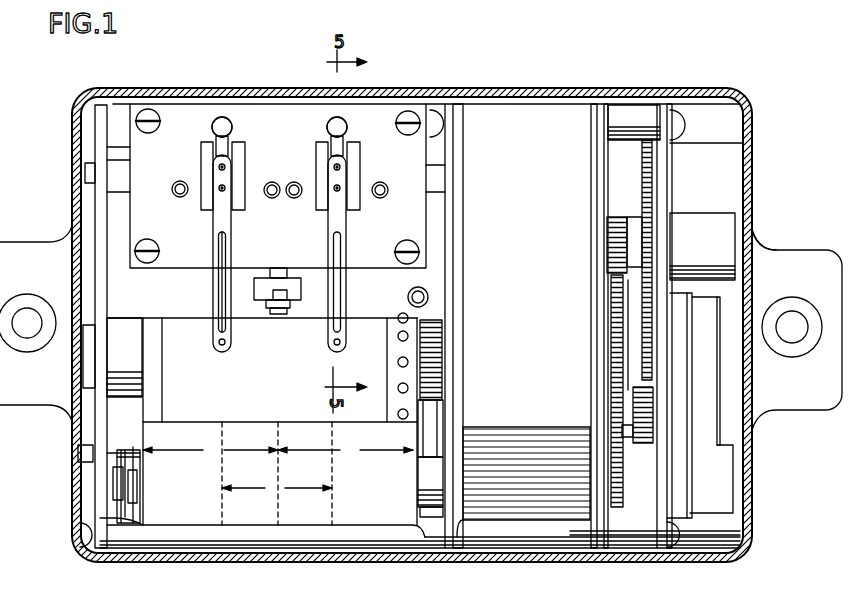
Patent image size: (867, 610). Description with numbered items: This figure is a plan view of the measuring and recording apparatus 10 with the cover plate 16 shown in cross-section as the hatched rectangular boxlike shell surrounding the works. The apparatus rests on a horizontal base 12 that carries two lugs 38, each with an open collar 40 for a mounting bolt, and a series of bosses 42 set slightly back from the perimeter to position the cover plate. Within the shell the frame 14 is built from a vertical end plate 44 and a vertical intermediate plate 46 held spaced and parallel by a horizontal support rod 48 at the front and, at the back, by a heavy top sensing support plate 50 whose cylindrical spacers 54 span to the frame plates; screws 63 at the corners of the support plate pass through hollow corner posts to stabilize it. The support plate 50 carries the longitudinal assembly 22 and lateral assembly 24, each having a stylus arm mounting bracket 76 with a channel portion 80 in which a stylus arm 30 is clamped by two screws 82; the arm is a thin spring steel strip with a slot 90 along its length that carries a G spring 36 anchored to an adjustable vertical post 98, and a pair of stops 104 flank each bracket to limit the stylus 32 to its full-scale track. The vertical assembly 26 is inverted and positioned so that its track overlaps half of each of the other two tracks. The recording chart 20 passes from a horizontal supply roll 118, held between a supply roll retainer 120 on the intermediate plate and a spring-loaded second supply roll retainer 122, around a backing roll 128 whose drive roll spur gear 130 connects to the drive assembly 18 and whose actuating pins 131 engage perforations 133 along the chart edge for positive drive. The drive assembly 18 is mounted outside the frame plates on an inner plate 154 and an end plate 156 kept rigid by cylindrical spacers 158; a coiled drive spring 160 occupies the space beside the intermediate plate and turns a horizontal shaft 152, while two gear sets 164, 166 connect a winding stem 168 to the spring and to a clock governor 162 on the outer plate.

The measuring and recording apparatus 10 is at (620, 70).
The base 12 is at (770, 243).
The frame 14 is at (95, 118).
The cover plate 16 is at (186, 97).
The drive assembly 18 is at (520, 518).
The recording chart 20 is at (231, 505).
The longitudinal assembly 22 is at (345, 119).
The lateral assembly 24 is at (230, 119).
The vertical assembly 26 is at (252, 304).
The stylus arm 30 is at (233, 238).
The stylus 32 is at (280, 315).
The G spring 36 is at (230, 218).
The lugs 38 is at (12, 408).
The open collar 40 is at (27, 343).
The bosses 42 is at (87, 147).
The end plate 44 is at (100, 195).
The intermediate plate 46 is at (450, 221).
The horizontal support rod 48 is at (138, 540).
The top sensing support plate 50 is at (200, 117).
The cylindrical spacers 54 is at (125, 196).
The screws 63 is at (148, 109).
The stylus arm mounting bracket 76 is at (238, 150).
The channel portion 80 is at (217, 153).
The screws 82 is at (226, 188).
The slot 90 is at (216, 280).
The vertical post 98 is at (234, 126).
The stops 104 is at (180, 181).
The supply roll 118 is at (166, 507).
The supply roll retainer 120 is at (433, 473).
The second supply roll retainer 122 is at (140, 455).
The backing roll 128 is at (124, 318).
The drive roll spur gear 130 is at (441, 335).
The actuating pins 131 is at (410, 316).
The perforations 133 is at (398, 362).
The horizontal shaft 152 is at (630, 415).
The inner plate 154 is at (600, 118).
The end plate 156 is at (674, 110).
The cylindrical spacers 158 is at (643, 117).
The coiled drive spring 160 is at (528, 403).
The clock governor 162 is at (702, 480).
The gear set 164 is at (612, 282).
The gear set 166 is at (640, 382).
The winding stem 168 is at (725, 232).